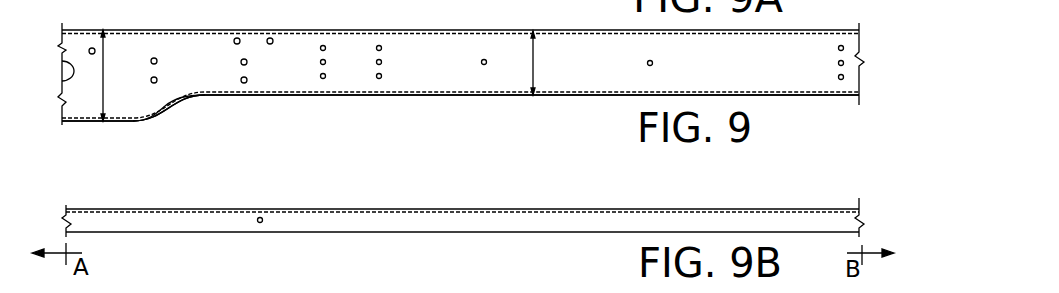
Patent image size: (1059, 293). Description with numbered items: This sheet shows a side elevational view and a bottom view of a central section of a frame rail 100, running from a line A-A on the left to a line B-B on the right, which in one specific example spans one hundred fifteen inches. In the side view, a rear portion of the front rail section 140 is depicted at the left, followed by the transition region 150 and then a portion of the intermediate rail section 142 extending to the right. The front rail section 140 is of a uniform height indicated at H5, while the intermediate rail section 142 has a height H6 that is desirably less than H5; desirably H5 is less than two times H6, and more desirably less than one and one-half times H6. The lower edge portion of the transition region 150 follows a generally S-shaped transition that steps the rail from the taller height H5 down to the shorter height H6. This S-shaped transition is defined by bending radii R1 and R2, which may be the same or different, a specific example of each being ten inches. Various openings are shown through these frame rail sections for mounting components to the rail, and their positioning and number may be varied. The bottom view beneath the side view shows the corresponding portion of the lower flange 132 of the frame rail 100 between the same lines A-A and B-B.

In FIG. 9, the frame rail 100 is at (85, 148).
In FIG. 9, the front rail section 140 is at (78, 102).
In FIG. 9, the intermediate rail section 142 is at (453, 53).
In FIG. 9, the transition region 150 is at (177, 125).
In FIG. 9, the first bending radius R1 is at (143, 115).
In FIG. 9, the second bending radius R2 is at (198, 100).
In FIG. 9, the height of front rail section H5 is at (103, 92).
In FIG. 9, the height of intermediate rail section H6 is at (535, 77).
In FIG. 9B, the lower flange 132 is at (318, 223).